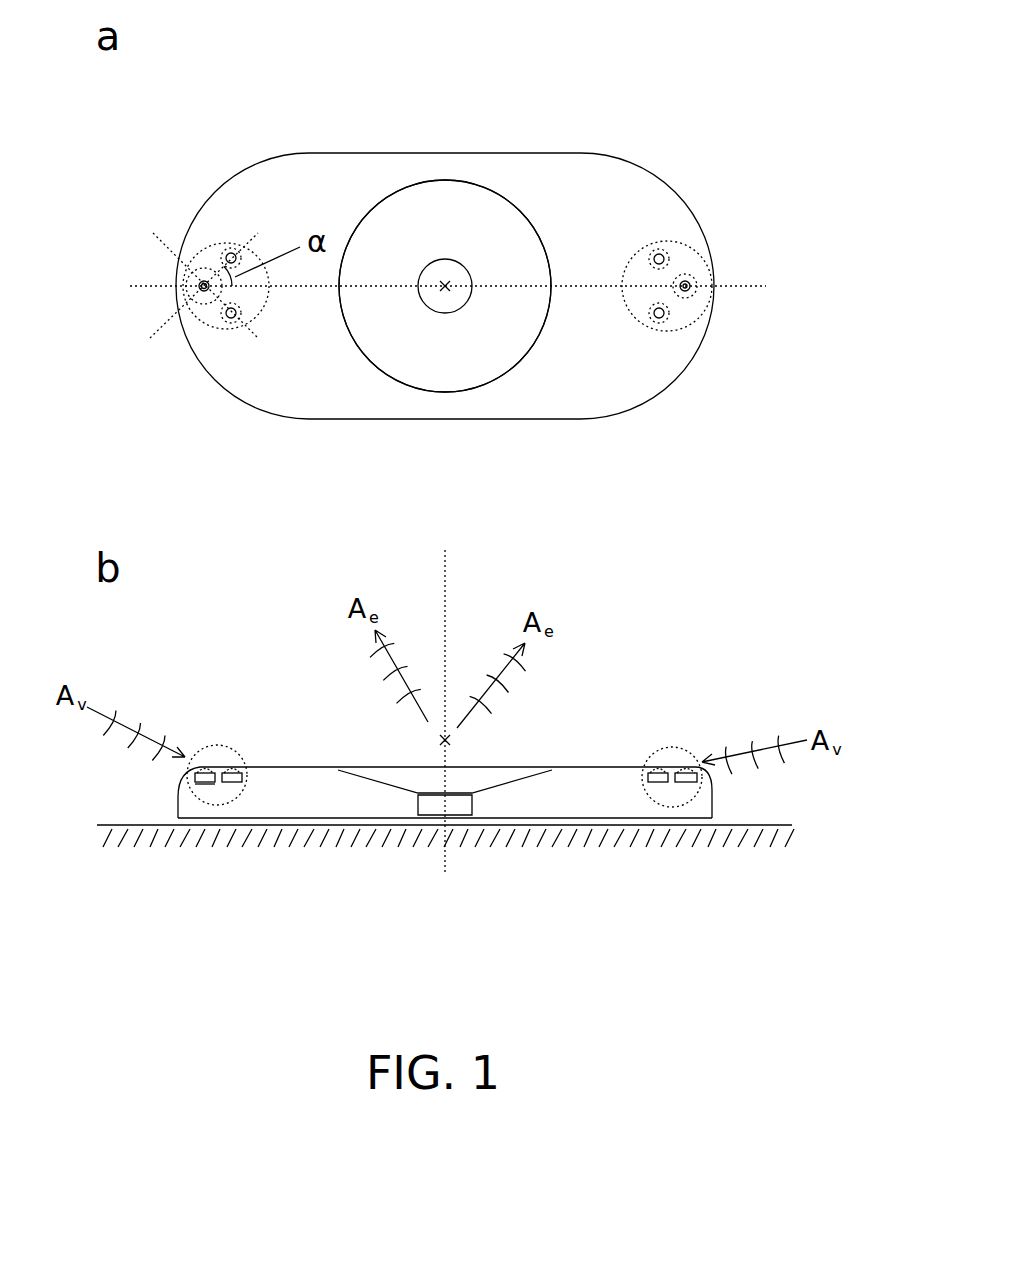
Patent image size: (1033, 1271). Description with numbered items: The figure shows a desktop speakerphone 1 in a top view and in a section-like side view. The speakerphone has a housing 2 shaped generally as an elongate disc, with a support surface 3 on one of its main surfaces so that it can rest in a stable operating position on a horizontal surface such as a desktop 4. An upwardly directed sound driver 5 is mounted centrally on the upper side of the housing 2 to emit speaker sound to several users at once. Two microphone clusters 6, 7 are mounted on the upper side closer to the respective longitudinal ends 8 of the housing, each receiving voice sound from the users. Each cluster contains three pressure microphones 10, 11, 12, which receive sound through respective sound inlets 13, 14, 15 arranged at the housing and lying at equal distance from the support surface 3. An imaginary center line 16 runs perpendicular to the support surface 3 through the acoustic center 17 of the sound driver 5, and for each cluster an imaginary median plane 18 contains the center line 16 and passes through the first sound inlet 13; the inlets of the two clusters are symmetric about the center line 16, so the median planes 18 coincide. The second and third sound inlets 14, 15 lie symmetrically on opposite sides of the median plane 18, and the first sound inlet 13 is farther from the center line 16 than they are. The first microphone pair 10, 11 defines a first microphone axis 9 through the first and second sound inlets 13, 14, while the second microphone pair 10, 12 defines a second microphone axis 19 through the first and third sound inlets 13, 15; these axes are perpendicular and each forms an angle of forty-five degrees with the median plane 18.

The desktop speakerphone 1 is at (657, 120).
The housing 2 is at (562, 152).
The support surface 3 is at (348, 823).
The desktop 4 is at (210, 840).
The sound driver 5 is at (463, 205).
The first microphone cluster 6 is at (193, 317).
The second microphone cluster 7 is at (702, 313).
The longitudinal end 8 is at (175, 273).
The first microphone axis 9 is at (150, 337).
The first pressure microphone 10 is at (202, 288).
The second pressure microphone 11 is at (231, 256).
The third pressure microphone 12 is at (227, 320).
The first sound inlet 13 is at (204, 284).
The second sound inlet 14 is at (233, 256).
The third sound inlet 15 is at (232, 320).
The center line 16 is at (450, 617).
The acoustic center 17 is at (450, 750).
The median plane 18 is at (515, 292).
The second microphone axis 19 is at (153, 233).